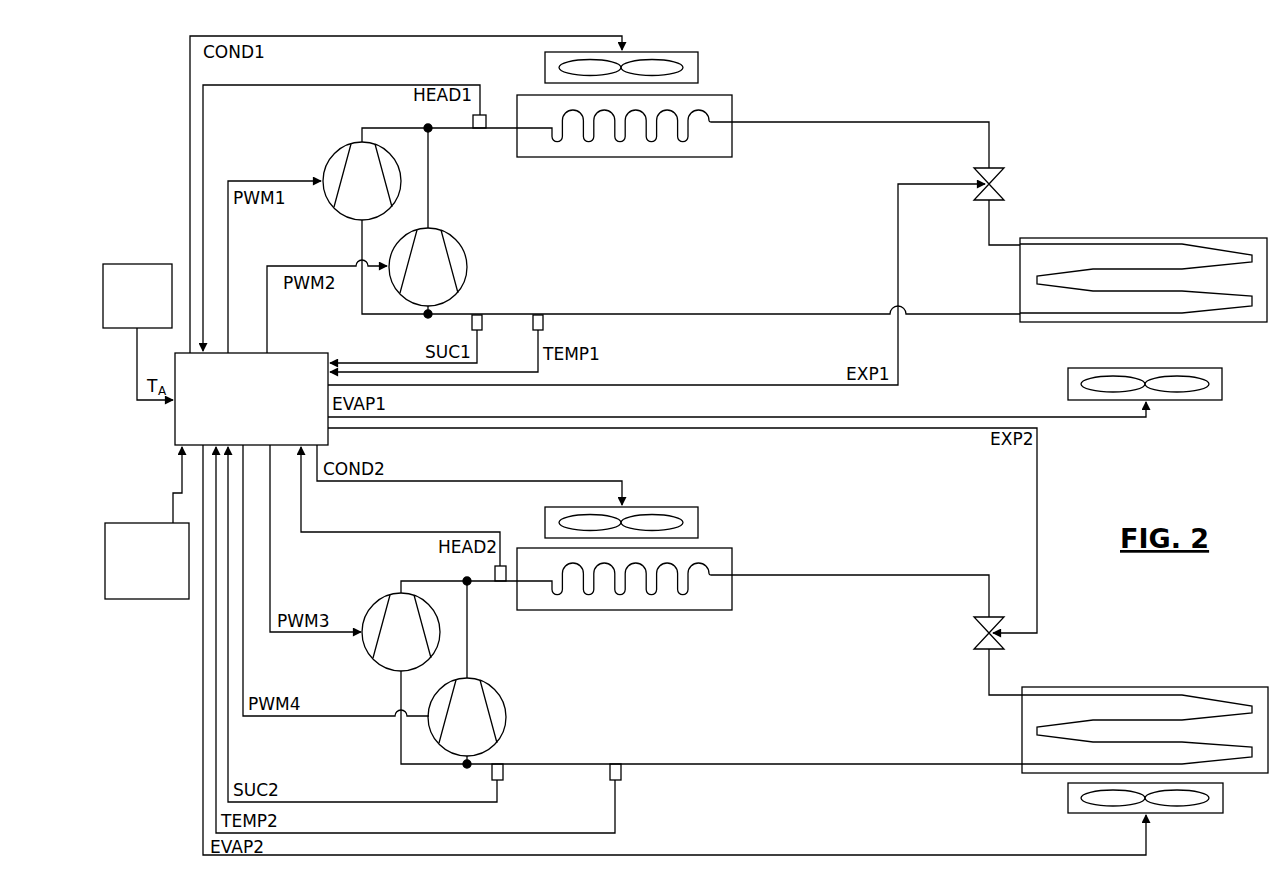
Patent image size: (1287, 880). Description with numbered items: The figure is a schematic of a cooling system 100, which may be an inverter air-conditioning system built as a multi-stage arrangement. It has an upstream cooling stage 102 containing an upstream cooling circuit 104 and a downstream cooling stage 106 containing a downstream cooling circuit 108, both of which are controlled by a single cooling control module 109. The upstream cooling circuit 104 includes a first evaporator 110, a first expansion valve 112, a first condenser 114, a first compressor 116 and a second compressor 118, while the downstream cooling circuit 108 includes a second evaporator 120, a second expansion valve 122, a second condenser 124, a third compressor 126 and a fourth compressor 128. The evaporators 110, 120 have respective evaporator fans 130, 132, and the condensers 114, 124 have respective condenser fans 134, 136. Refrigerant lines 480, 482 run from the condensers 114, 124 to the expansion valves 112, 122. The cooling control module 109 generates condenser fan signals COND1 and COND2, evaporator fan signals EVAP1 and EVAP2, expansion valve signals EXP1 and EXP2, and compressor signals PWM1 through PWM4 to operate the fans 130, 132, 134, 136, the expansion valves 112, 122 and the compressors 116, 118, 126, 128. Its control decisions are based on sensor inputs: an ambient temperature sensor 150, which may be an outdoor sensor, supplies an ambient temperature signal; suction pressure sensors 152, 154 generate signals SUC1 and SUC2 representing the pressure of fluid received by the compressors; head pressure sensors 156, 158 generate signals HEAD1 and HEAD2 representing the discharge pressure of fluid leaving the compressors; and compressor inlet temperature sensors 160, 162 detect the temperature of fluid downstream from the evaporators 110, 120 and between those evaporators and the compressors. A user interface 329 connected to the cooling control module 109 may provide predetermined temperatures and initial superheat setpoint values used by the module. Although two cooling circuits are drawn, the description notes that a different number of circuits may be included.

The cooling system 100 is at (1134, 65).
The upstream cooling stage 102 is at (178, 182).
The upstream cooling circuit 104 is at (1056, 166).
The downstream cooling stage 106 is at (187, 748).
The downstream cooling circuit 108 is at (1095, 646).
The cooling control module 109 is at (175, 432).
The first evaporator 110 is at (1161, 238).
The first expansion valve 112 is at (985, 200).
The first condenser 114 is at (733, 105).
The first compressor 116 is at (342, 152).
The second compressor 118 is at (460, 244).
The second evaporator 120 is at (1208, 687).
The second expansion valve 122 is at (980, 617).
The second condenser 124 is at (733, 568).
The third compressor 126 is at (378, 603).
The fourth compressor 128 is at (506, 716).
The first evaporator fan 130 is at (1222, 388).
The second evaporator fan 132 is at (1223, 800).
The first condenser fan 134 is at (698, 68).
The second condenser fan 136 is at (698, 524).
The ambient temperature sensor 150 is at (143, 264).
The first suction pressure sensor 152 is at (484, 322).
The second suction pressure sensor 154 is at (503, 770).
The first head pressure sensor 156 is at (479, 128).
The second head pressure sensor 158 is at (496, 569).
The first compressor inlet temperature sensor 160 is at (546, 322).
The second compressor inlet temperature sensor 162 is at (621, 770).
The user interface 329 is at (141, 523).
The first condenser outlet line 480 is at (989, 128).
The second condenser outlet line 482 is at (901, 574).